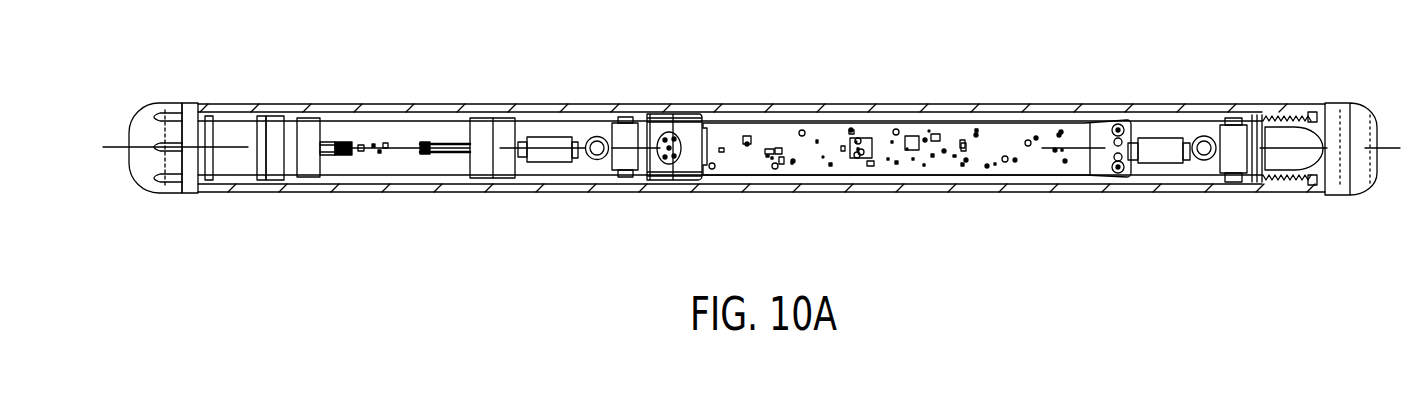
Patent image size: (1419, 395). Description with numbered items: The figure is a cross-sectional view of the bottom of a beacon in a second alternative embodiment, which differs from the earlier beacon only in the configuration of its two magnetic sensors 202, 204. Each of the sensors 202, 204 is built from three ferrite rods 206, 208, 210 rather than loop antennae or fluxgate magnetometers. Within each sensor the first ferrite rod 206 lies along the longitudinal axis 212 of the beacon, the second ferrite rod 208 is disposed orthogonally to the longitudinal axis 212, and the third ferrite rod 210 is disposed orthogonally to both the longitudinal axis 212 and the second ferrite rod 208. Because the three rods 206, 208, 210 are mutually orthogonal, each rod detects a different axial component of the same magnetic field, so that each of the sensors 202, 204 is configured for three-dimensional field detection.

The magnetic sensor 202 is at (1198, 123).
The magnetic sensor 204 is at (578, 118).
The first ferrite rod 206 is at (543, 162).
The second ferrite rod 208 is at (599, 137).
The third ferrite rod 210 is at (627, 137).
The longitudinal axis 212 is at (110, 147).